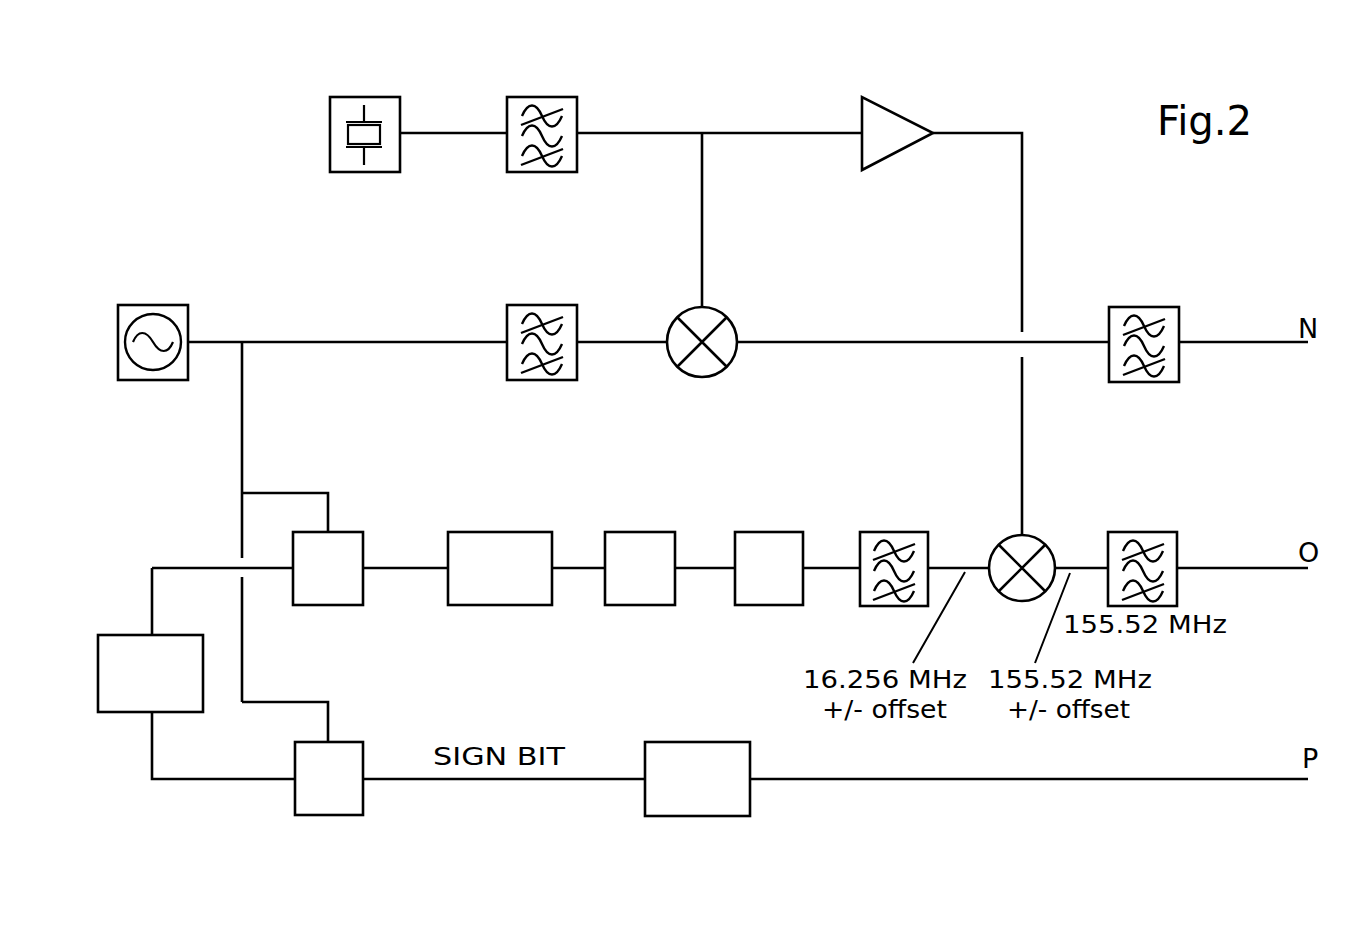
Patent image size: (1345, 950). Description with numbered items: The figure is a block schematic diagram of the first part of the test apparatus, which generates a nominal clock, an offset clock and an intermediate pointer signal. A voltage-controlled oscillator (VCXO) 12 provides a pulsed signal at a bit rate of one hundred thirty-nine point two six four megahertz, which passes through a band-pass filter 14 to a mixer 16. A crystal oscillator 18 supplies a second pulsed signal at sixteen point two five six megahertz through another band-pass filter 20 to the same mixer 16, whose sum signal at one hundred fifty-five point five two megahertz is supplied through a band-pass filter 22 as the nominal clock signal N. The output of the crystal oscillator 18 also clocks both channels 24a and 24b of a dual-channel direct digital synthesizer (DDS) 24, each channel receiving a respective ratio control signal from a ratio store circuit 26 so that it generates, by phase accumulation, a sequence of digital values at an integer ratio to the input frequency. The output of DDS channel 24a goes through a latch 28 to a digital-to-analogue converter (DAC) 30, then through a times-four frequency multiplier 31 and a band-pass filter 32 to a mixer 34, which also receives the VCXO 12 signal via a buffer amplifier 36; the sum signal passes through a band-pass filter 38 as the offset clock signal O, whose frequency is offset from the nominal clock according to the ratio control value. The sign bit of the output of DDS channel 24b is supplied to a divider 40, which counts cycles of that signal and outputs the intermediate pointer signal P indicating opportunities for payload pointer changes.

The voltage-controlled oscillator (VCXO) 12 is at (374, 105).
The band-pass filter 14 is at (550, 100).
The mixer 16 is at (707, 318).
The crystal oscillator 18 is at (152, 375).
The band-pass filter 20 is at (547, 312).
The band-pass filter 22 is at (1168, 358).
The dual-channel direct digital synthesizer (DDS) 24 is at (355, 619).
The DDS channel 24a is at (353, 548).
The DDS channel 24b is at (343, 803).
The ratio store circuit 26 is at (125, 647).
The latch 28 is at (505, 543).
The digital-to-analogue converter (DAC) 30 is at (640, 538).
The ×4 frequency multiplier 31 is at (770, 540).
The band-pass filter 32 is at (902, 540).
The mixer 34 is at (1027, 547).
The buffer amplifier 36 is at (903, 127).
The band-pass filter 38 is at (1153, 542).
The divider 40 is at (690, 750).